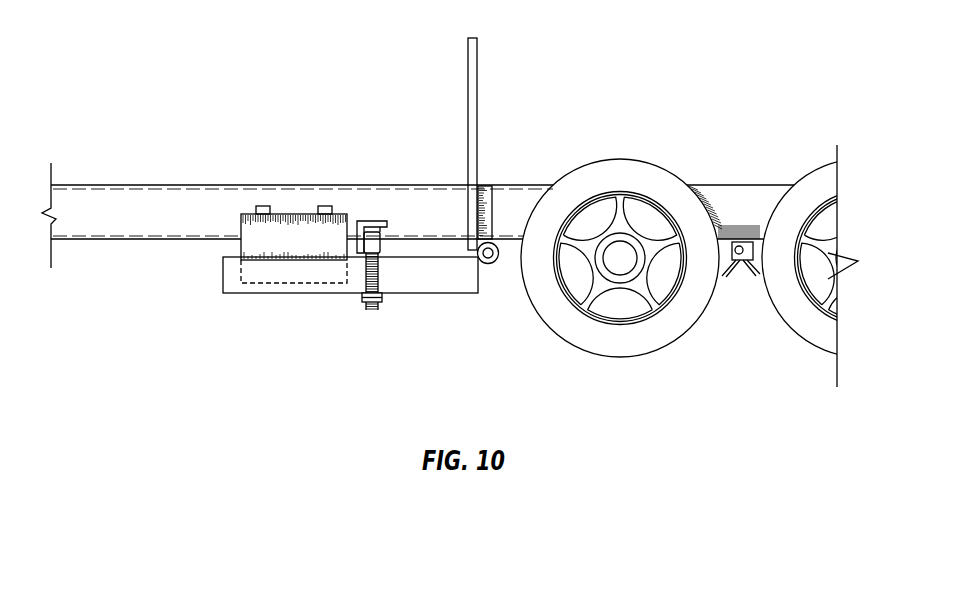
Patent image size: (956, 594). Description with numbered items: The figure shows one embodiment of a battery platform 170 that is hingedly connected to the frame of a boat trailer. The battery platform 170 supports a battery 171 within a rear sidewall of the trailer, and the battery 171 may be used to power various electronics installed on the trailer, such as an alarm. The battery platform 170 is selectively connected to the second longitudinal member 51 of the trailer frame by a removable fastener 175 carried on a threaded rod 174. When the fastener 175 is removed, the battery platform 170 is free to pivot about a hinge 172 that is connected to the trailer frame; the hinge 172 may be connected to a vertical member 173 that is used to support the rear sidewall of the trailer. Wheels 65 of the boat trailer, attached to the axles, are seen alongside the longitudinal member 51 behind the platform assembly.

The second longitudinal member 51 is at (140, 184).
The wheels 65 is at (648, 343).
The battery platform 170 is at (238, 294).
The battery 171 is at (288, 213).
The hinge 172 is at (490, 265).
The vertical member 173 is at (468, 97).
The threaded rod 174 is at (382, 239).
The removable fastener 175 is at (368, 304).